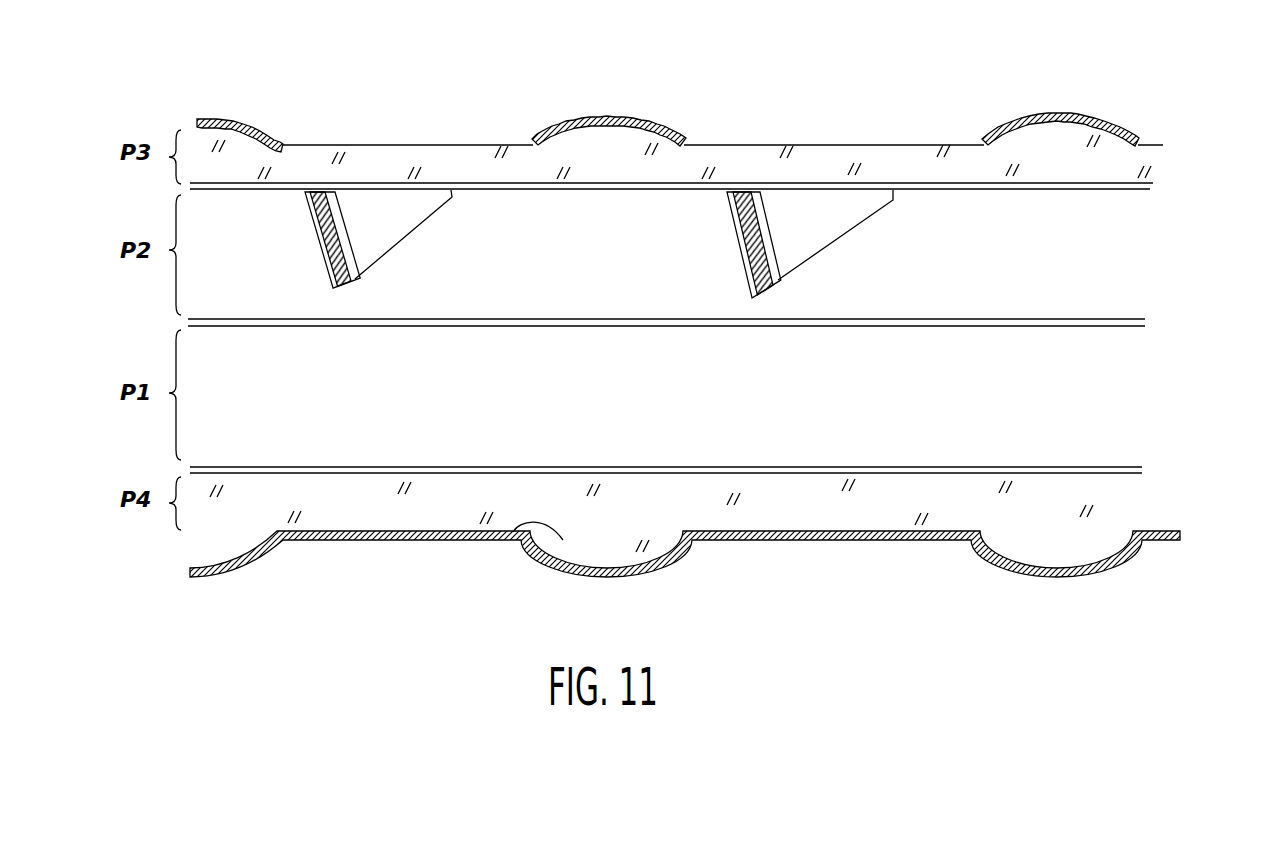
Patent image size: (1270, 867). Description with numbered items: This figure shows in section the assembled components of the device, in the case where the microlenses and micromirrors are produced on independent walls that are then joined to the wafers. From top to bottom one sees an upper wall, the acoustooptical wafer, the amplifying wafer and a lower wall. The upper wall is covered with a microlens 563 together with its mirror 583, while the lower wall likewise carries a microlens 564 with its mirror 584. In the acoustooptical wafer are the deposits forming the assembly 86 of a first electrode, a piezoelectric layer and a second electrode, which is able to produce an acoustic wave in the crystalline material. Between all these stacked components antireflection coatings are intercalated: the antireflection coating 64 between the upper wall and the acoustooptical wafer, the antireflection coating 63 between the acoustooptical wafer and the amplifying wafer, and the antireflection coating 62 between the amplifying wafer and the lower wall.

The microlens 563 is at (580, 133).
The mirror 583 is at (637, 120).
The assembly 86 is at (755, 213).
The antireflection coating 64 is at (1107, 182).
The antireflection coating 63 is at (1113, 319).
The antireflection coating 62 is at (1113, 466).
The microlens 564 is at (498, 535).
The mirror 584 is at (653, 567).